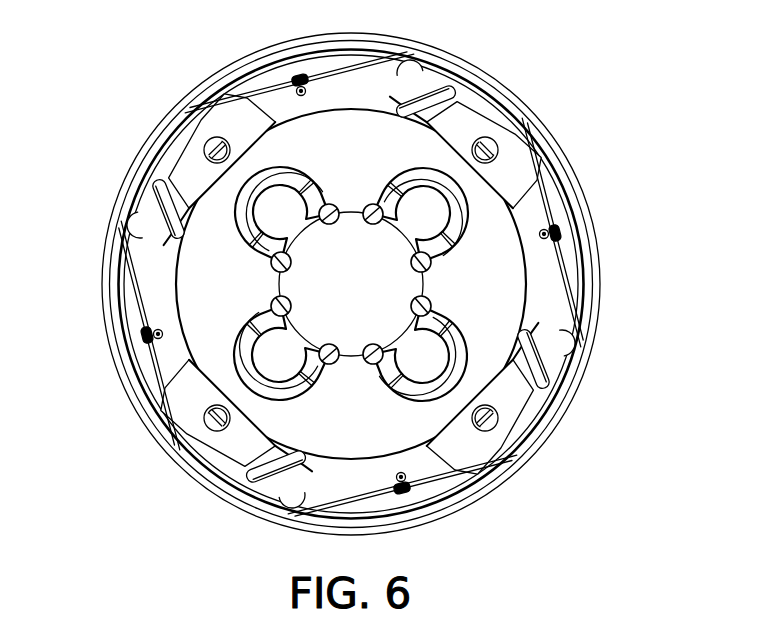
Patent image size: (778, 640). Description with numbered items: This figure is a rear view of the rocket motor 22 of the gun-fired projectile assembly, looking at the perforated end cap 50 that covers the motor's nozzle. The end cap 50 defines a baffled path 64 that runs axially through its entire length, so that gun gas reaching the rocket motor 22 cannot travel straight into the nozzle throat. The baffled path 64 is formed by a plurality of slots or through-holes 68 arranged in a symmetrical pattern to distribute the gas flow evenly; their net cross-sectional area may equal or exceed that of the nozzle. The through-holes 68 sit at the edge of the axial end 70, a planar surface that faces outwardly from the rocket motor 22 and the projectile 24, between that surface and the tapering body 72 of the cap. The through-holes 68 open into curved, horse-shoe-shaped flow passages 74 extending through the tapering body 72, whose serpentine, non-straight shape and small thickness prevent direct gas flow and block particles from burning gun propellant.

The rocket motor 22 is at (397, 502).
The projectile 24 is at (458, 445).
The perforated end cap 50 is at (553, 192).
The baffled path 64 is at (450, 185).
The through-holes 68 is at (425, 262).
The axial end 70 is at (392, 288).
The tapering body 72 is at (397, 140).
The flow passages 74 is at (232, 358).